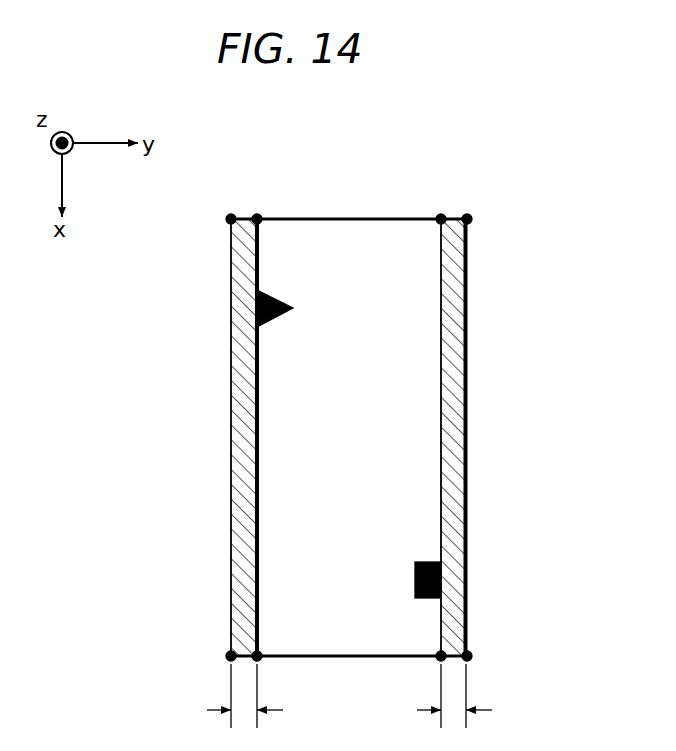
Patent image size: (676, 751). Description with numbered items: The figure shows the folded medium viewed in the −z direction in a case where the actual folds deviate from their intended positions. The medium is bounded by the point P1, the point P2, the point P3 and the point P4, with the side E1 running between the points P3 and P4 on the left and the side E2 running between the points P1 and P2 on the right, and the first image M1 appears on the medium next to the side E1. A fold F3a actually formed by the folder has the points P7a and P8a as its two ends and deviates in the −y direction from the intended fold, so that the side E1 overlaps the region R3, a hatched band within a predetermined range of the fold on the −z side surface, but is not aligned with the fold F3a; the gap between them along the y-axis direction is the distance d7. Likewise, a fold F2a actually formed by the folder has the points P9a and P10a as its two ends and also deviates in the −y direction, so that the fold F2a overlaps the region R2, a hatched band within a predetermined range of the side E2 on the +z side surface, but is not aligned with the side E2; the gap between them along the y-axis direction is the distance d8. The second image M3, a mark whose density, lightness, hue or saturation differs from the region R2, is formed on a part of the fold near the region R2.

The point P7a is at (231, 217).
The point P3 is at (258, 217).
The point P9a is at (441, 217).
The point P1 is at (467, 217).
The point P8a is at (231, 656).
The point P4 is at (258, 655).
The point P10a is at (441, 655).
The point P2 is at (467, 656).
The first image M1 is at (282, 302).
The second image M3 is at (415, 572).
The region R3 is at (243, 332).
The region R2 is at (452, 300).
The side E1 is at (259, 460).
The side E2 is at (467, 430).
The fold F3a is at (231, 462).
The fold F2a is at (441, 365).
The distance d7 is at (225, 696).
The distance d8 is at (472, 696).